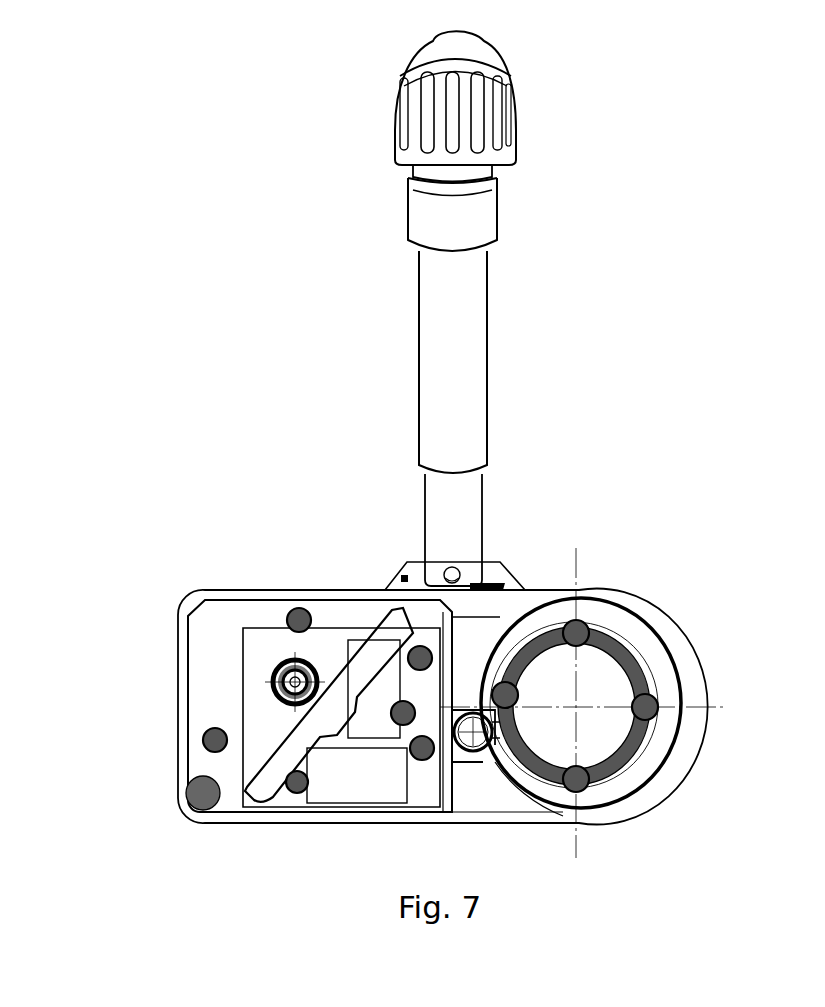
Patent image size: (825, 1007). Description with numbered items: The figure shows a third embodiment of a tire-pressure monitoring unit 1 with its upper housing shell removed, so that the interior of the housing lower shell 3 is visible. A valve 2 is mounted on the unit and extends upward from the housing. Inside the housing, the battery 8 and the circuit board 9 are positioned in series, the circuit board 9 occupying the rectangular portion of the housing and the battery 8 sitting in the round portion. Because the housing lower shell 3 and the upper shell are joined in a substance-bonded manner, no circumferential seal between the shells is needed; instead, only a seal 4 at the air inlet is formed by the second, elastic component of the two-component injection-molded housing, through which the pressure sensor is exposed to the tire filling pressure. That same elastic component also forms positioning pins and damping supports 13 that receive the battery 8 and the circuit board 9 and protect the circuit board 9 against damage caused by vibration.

The tire-pressure monitoring unit 1 is at (215, 527).
The valve 2 is at (435, 350).
The housing lower shell 3 is at (683, 692).
The seal 4 is at (268, 682).
The battery 8 is at (610, 732).
The circuit board 9 is at (260, 638).
The positioning pins and damping supports 13 is at (207, 738).